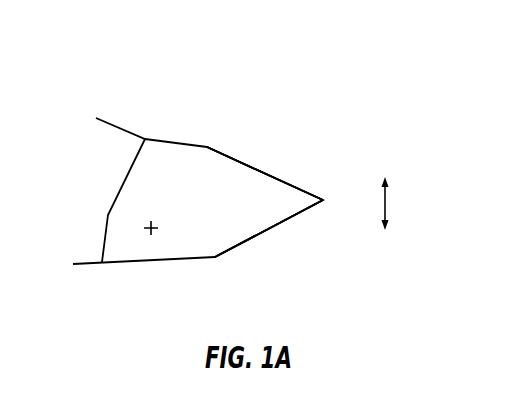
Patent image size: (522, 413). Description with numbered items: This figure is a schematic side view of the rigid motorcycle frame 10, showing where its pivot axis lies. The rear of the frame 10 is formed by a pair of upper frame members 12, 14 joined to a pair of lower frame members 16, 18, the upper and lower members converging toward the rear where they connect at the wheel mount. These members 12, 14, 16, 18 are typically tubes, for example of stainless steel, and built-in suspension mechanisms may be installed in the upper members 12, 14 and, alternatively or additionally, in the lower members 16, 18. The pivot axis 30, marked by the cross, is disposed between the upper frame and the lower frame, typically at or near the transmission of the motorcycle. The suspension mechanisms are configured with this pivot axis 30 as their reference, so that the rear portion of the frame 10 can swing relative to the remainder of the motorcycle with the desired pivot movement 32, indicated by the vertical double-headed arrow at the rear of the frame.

The motorcycle frame 10 is at (236, 86).
The upper frame member 12 is at (273, 173).
The upper frame member 14 is at (265, 173).
The lower frame member 16 is at (273, 230).
The lower frame member 18 is at (269, 228).
The pivot axis 30 is at (148, 232).
The pivot movement 32 is at (386, 202).